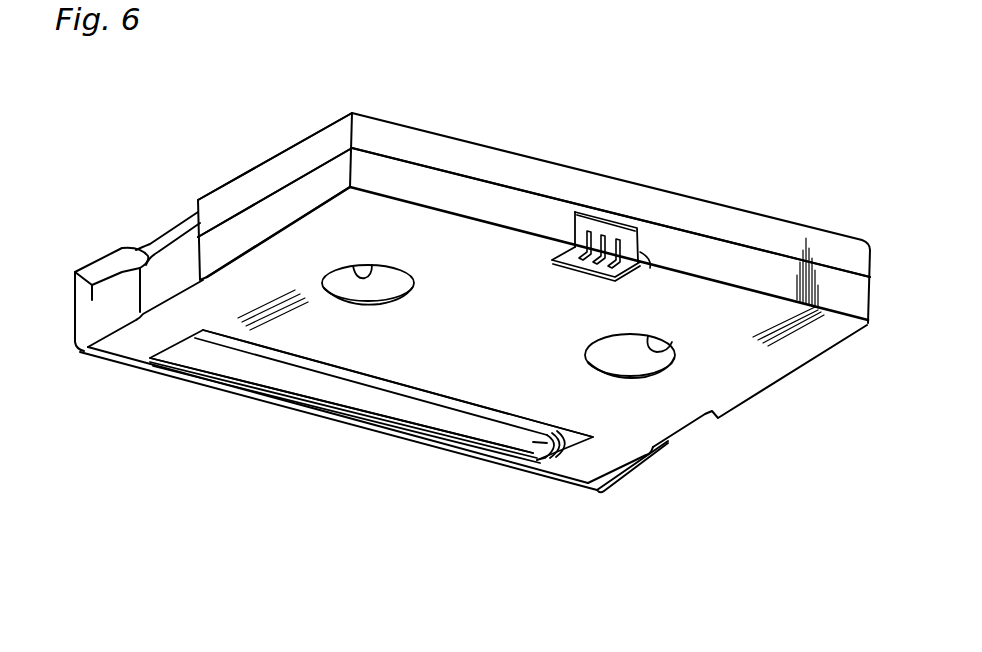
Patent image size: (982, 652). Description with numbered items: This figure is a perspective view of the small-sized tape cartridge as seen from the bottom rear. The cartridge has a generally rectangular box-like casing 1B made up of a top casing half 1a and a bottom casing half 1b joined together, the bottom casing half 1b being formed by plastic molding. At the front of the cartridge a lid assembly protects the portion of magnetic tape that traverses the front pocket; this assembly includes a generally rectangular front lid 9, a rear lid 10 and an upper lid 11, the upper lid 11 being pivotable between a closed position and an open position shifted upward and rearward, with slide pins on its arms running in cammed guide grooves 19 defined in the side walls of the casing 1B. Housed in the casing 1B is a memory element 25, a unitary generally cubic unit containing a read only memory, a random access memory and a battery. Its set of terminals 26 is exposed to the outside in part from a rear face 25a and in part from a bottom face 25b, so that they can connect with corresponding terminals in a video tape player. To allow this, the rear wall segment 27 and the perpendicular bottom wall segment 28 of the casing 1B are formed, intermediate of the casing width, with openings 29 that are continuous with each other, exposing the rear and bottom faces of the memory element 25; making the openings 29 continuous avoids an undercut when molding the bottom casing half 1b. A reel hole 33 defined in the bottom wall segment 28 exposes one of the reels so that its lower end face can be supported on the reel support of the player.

The casing 1B is at (407, 115).
The top casing half 1a is at (315, 145).
The bottom casing half 1b is at (265, 215).
The front lid 9 is at (210, 387).
The rear lid 10 is at (293, 378).
The upper lid 11 is at (108, 252).
The cammed guide groove 19 is at (178, 232).
The memory element 25 is at (619, 218).
The rear face 25a is at (583, 222).
The bottom face 25b is at (568, 260).
The terminals 26 is at (622, 242).
The rear wall segment 27 is at (487, 198).
The bottom wall segment 28 is at (440, 360).
The openings 29 is at (630, 270).
The reel hole 33 is at (362, 276).